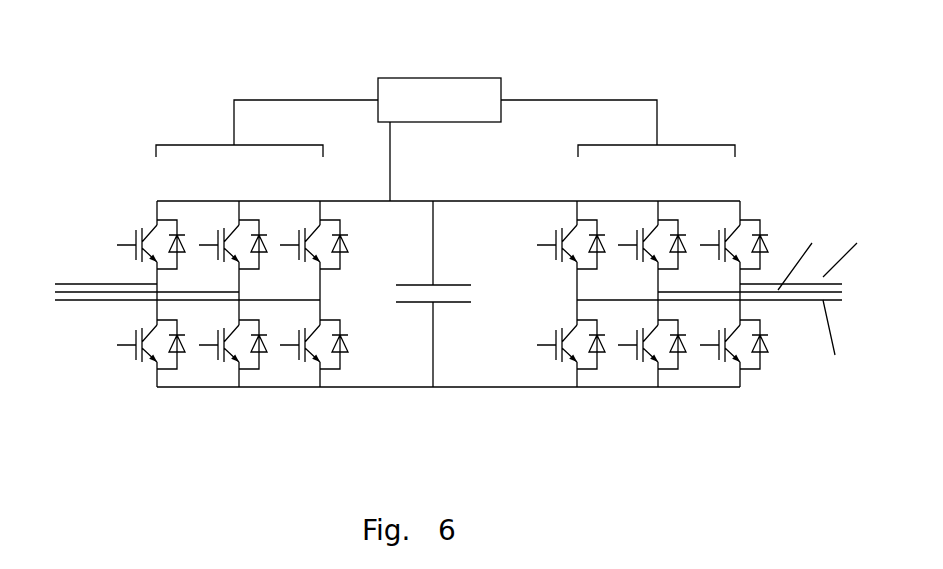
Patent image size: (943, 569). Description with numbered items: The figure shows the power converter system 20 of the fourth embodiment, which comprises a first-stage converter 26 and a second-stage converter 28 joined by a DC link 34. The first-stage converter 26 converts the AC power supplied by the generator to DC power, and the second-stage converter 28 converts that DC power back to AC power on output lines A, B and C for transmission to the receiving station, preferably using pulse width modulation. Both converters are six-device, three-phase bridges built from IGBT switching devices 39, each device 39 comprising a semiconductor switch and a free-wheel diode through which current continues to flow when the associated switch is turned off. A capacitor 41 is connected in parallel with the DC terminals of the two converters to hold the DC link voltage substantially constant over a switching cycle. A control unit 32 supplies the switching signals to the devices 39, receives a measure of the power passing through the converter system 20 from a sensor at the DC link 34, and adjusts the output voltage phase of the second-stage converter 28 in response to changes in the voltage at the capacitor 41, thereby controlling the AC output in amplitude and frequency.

The power converter system 20 is at (100, 220).
The first-stage converter 26 is at (202, 387).
The second-stage converter 28 is at (593, 387).
The control unit 32 is at (412, 78).
The DC link 34 is at (388, 199).
The switching device 39 is at (157, 220).
The capacitor 41 is at (445, 302).